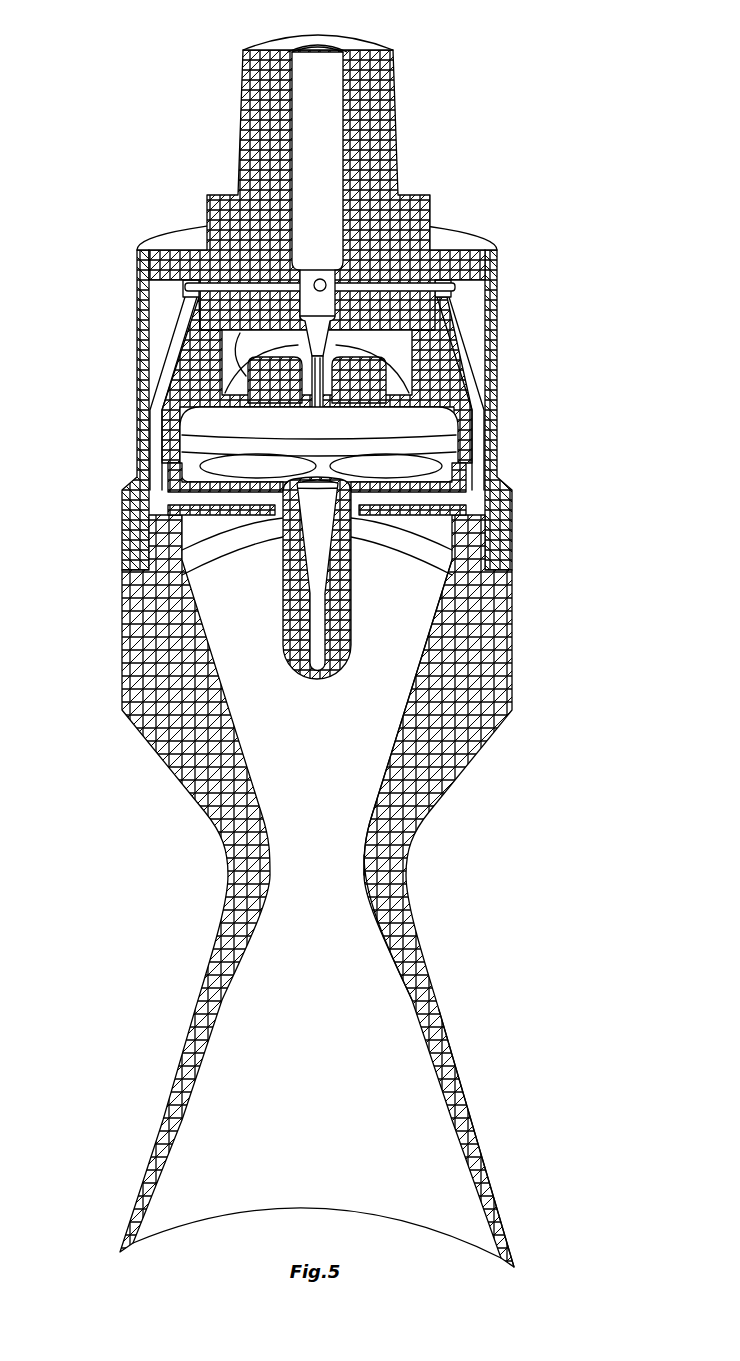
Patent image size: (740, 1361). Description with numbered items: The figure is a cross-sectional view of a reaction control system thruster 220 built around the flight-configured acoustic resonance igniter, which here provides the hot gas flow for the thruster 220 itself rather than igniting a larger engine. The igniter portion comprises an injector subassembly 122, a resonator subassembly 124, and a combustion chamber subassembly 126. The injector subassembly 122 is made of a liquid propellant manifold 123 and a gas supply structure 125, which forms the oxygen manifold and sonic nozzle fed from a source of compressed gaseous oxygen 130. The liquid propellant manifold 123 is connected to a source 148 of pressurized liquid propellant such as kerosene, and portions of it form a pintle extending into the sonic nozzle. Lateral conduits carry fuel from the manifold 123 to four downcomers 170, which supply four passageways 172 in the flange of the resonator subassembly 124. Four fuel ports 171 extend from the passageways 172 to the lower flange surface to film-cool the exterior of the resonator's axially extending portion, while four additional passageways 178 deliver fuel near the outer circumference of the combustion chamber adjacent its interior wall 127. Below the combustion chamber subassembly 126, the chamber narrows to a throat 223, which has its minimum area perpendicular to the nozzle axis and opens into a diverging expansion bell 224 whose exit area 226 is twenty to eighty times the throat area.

The source of pressurized liquid propellant 148 is at (330, 47).
The liquid propellant manifold 123 is at (430, 200).
The reaction control system thruster 220 is at (527, 259).
The injector subassembly 122 is at (137, 303).
The downcomers 170 is at (466, 358).
The source of compressed gaseous oxygen 130 is at (253, 355).
The gas supply structure 125 is at (500, 382).
The passageways 172 is at (456, 502).
The additional passageways 178 is at (187, 508).
The fuel ports 171 is at (355, 527).
The resonator subassembly 124 is at (412, 523).
The combustion chamber subassembly 126 is at (514, 658).
The combustion chamber 127 is at (383, 748).
The throat 223 is at (363, 828).
The expansion bell 224 is at (468, 1125).
The nozzle exit 226 is at (417, 1217).